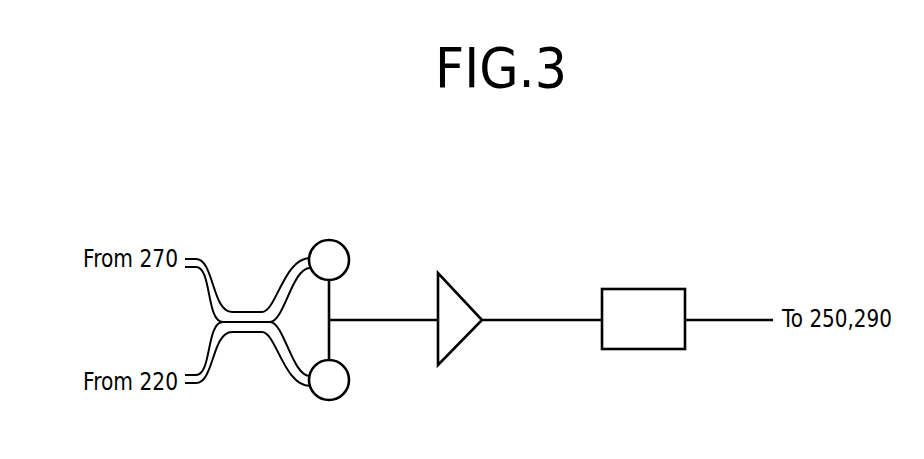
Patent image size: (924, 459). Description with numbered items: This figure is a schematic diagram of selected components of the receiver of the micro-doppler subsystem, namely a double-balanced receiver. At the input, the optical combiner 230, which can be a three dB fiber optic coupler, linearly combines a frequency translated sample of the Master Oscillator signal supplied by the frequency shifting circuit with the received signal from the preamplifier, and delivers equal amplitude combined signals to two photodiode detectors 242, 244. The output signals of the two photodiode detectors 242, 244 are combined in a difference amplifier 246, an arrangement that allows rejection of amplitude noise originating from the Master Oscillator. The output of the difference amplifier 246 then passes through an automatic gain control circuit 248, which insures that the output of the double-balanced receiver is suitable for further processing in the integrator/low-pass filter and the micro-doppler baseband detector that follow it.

The optical combiner 230 is at (252, 334).
The photodiode detector 242 is at (331, 239).
The photodiode detector 244 is at (350, 383).
The difference amplifier 246 is at (478, 339).
The automatic gain control circuit 248 is at (630, 277).